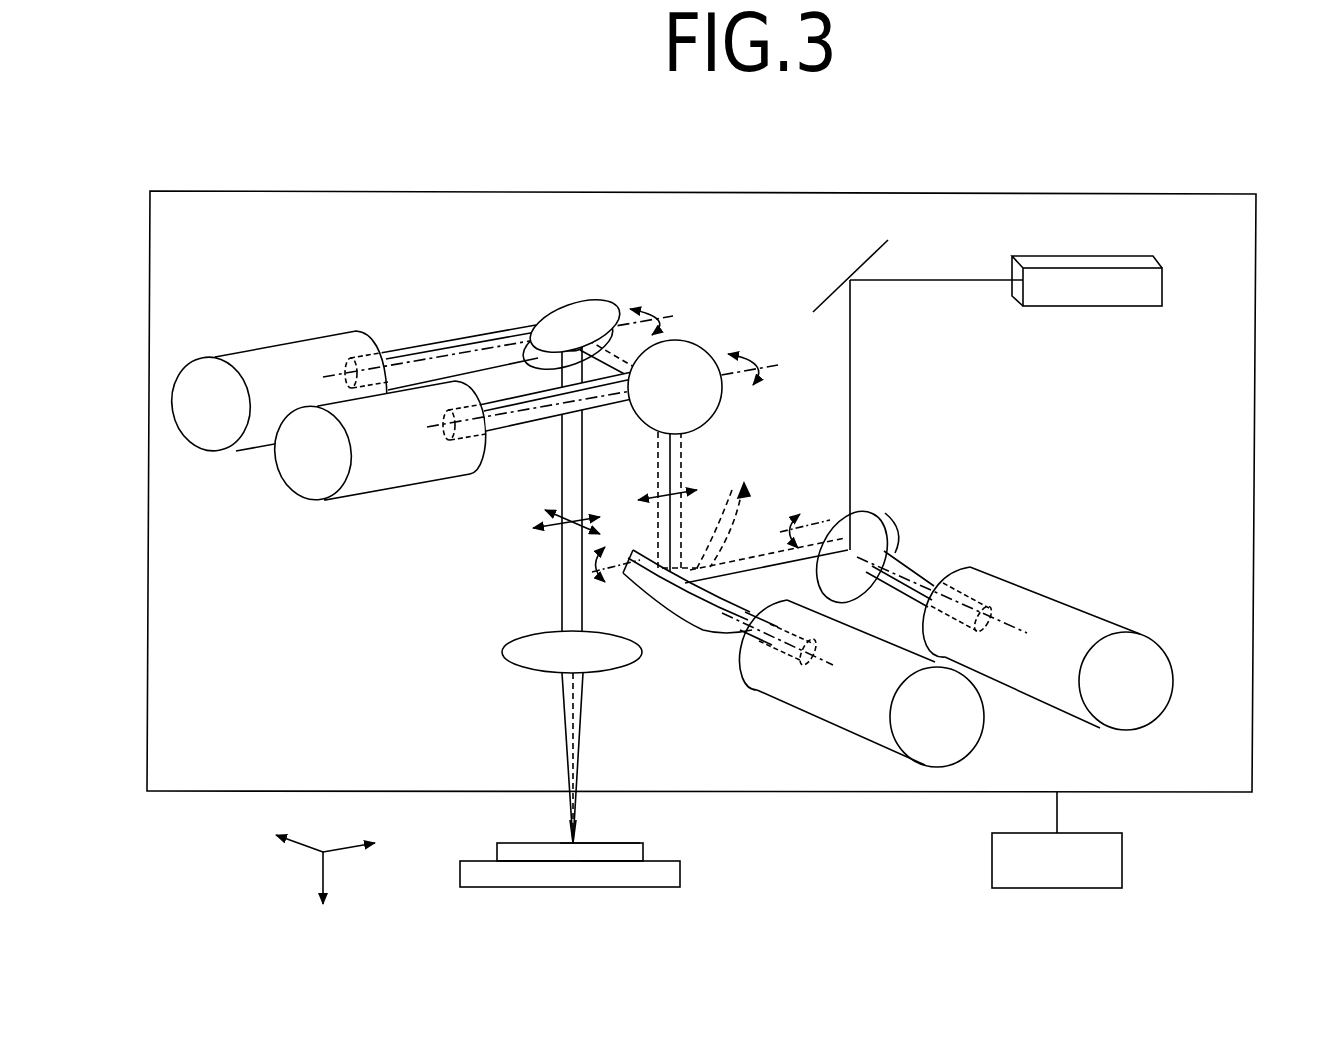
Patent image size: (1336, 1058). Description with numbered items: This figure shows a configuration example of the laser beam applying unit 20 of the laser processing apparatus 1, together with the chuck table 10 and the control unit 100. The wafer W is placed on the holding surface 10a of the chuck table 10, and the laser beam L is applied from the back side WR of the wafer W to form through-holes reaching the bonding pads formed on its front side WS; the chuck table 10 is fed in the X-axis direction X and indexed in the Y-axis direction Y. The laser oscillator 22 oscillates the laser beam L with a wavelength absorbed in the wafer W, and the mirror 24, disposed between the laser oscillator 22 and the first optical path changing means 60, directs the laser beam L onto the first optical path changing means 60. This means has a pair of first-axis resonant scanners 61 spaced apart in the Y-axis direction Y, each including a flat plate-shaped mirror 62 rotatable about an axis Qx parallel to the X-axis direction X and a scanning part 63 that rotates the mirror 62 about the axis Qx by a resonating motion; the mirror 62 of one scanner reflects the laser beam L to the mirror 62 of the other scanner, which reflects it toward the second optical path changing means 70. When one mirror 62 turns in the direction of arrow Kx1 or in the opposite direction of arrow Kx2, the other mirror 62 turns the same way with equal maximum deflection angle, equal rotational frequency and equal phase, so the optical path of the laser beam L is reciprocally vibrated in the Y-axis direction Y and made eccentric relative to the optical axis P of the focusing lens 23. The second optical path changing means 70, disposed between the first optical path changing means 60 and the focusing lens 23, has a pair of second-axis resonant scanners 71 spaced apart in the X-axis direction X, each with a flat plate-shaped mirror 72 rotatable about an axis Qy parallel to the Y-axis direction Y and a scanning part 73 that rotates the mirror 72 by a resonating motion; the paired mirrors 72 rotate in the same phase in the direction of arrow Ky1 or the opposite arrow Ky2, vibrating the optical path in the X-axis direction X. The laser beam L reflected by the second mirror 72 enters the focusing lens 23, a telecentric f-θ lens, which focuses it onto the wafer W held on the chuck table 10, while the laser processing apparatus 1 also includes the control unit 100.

The laser processing apparatus 1 is at (457, 127).
The laser beam applying unit 20 is at (741, 187).
The laser oscillator 22 is at (1088, 266).
The mirror 24 is at (848, 278).
The focusing lens 23 is at (503, 654).
The chuck table 10 is at (682, 876).
The holding surface 10a is at (602, 862).
The first optical path changing means 60 is at (1029, 552).
The first-axis resonant scanner 61 is at (1072, 717).
The mirror 62 is at (878, 513).
The scanning part 63 is at (812, 700).
The second optical path changing means 70 is at (476, 318).
The second-axis resonant scanner 71 is at (238, 458).
The mirror 72 is at (560, 316).
The scanning part 73 is at (282, 358).
The control unit 100 is at (1088, 820).
The wafer W is at (650, 852).
The back side WR is at (605, 843).
The front side WS is at (543, 862).
The optical axis P is at (568, 742).
The laser beam L is at (917, 282).
The axis Qx is at (903, 573).
The axis Qy is at (603, 311).
The arrow Kx1 is at (605, 585).
The arrow Kx2 is at (822, 492).
The arrow Ky1 is at (654, 320).
The arrow Ky2 is at (643, 304).
The X-axis direction X is at (570, 503).
The Y-axis direction Y is at (558, 538).